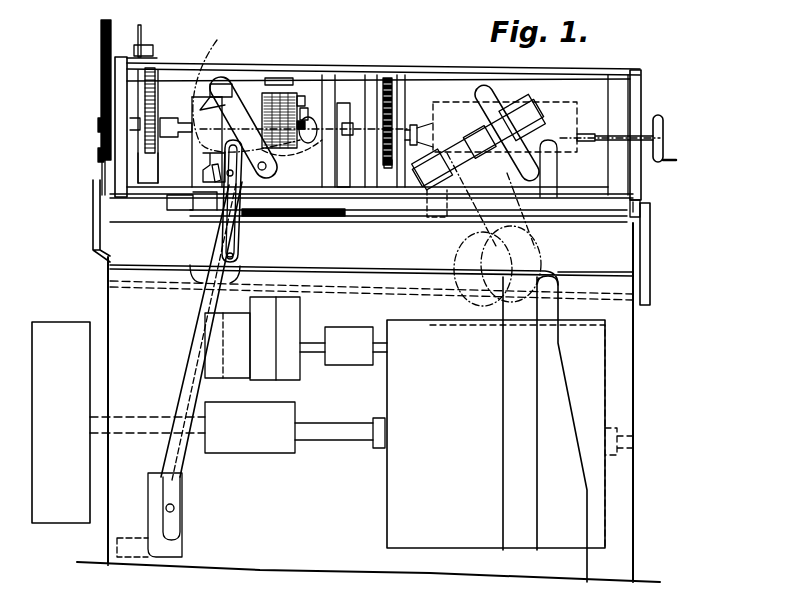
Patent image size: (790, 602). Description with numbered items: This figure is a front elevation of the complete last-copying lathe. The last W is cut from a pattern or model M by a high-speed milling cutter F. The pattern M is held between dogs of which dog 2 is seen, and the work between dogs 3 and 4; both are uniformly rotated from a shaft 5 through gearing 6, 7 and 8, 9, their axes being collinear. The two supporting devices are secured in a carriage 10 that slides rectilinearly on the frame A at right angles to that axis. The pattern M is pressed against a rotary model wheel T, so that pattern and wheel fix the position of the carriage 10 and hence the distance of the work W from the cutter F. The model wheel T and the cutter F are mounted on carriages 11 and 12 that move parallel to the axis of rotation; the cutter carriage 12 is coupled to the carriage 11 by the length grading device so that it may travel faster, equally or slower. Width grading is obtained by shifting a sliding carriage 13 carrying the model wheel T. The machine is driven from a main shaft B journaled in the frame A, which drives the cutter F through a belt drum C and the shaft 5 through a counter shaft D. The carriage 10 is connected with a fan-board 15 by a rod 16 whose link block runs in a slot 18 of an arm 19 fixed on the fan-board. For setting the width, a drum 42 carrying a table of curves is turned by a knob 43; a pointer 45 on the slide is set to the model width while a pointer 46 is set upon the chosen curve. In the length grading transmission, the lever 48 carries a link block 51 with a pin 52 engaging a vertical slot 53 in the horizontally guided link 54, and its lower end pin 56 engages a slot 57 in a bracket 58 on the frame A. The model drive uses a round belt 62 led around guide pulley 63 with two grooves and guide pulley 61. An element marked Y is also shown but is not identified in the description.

The carriage 10 is at (120, 56).
The arm 19 is at (141, 31).
The rod 16 is at (151, 50).
The gearing 7 is at (156, 72).
The pin 56 is at (101, 53).
The round belt 62 is at (100, 126).
The guide pulley 63 is at (100, 157).
The guide pulley 61 is at (97, 205).
The gearing 6 is at (148, 168).
The carriage 11 is at (201, 168).
The block Y is at (176, 135).
The pattern M is at (246, 90).
The shaft 5 is at (228, 86).
The sliding carriage 13 is at (246, 86).
The model wheel T is at (288, 78).
The knob or hand wheel 43 is at (300, 95).
The drum 42 is at (305, 118).
The gearing 9 is at (393, 77).
The dog 2 is at (318, 128).
The pointer 46 is at (309, 117).
The pointer 45 is at (292, 148).
The link block 51 is at (266, 169).
The fan-board 15 is at (343, 150).
The gearing 8 is at (388, 165).
The dog 3 is at (415, 141).
The last W is at (505, 127).
The milling cutter F is at (500, 104).
The dog 4 is at (586, 141).
The carriage 12 is at (550, 181).
The pin 52 is at (243, 208).
The vertical slot 53 is at (238, 257).
The link 54 is at (330, 205).
The lever 48 is at (213, 303).
The slot 57 is at (174, 527).
The bracket 58 is at (178, 545).
The frame A is at (652, 332).
The counter shaft D is at (304, 343).
The belt drum C is at (496, 434).
The main shaft B is at (353, 433).
The slot 18 is at (202, 594).